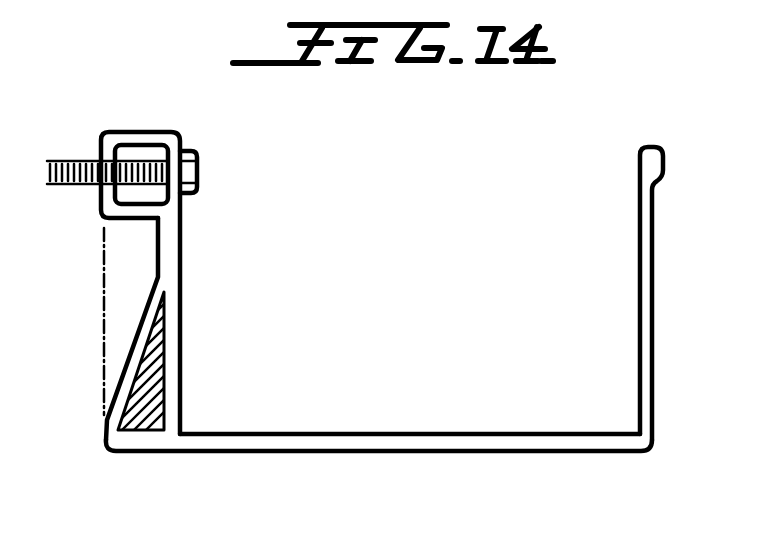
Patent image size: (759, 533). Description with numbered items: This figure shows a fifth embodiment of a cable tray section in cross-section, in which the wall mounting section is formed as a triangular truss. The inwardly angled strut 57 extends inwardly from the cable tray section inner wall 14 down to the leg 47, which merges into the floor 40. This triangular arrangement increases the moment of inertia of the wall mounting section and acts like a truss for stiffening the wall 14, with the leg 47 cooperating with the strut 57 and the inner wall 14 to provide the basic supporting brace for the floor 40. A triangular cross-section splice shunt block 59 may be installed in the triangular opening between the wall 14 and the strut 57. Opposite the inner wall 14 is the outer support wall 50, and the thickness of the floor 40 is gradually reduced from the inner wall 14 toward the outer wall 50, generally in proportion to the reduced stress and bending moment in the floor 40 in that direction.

The inner wall 14 is at (182, 343).
The floor 40 is at (418, 433).
The leg 47 is at (135, 453).
The outer support wall 50 is at (640, 297).
The inwardly angled strut 57 is at (137, 338).
The splice shunt block 59 is at (160, 388).